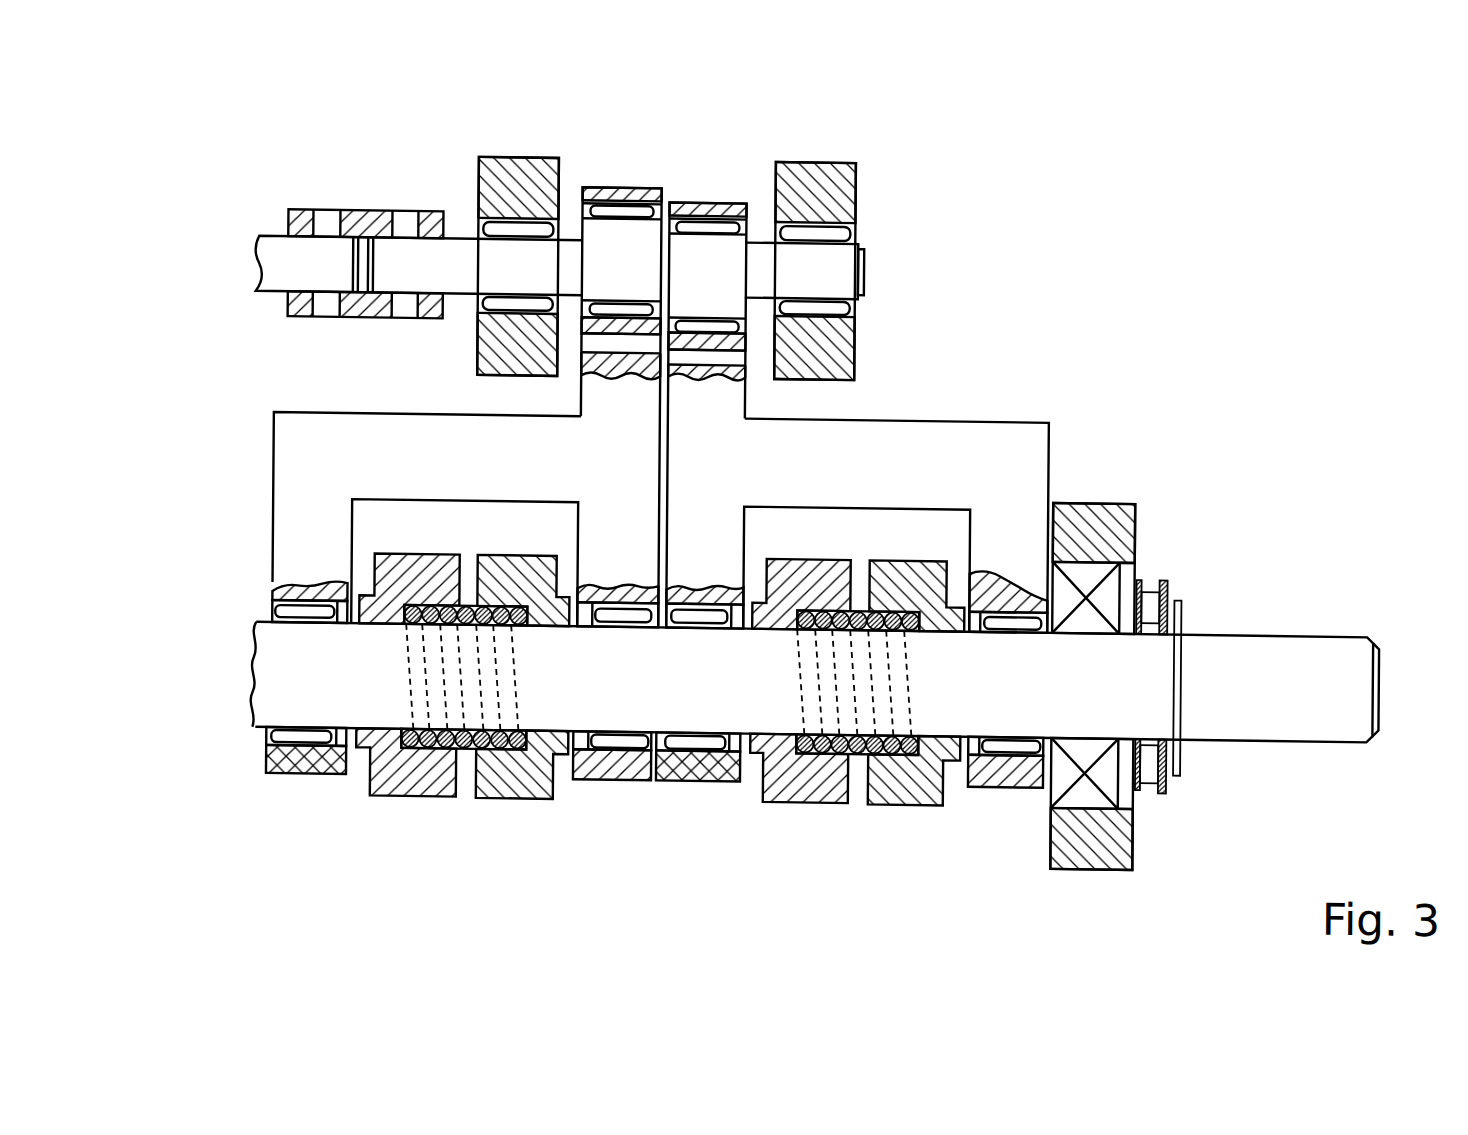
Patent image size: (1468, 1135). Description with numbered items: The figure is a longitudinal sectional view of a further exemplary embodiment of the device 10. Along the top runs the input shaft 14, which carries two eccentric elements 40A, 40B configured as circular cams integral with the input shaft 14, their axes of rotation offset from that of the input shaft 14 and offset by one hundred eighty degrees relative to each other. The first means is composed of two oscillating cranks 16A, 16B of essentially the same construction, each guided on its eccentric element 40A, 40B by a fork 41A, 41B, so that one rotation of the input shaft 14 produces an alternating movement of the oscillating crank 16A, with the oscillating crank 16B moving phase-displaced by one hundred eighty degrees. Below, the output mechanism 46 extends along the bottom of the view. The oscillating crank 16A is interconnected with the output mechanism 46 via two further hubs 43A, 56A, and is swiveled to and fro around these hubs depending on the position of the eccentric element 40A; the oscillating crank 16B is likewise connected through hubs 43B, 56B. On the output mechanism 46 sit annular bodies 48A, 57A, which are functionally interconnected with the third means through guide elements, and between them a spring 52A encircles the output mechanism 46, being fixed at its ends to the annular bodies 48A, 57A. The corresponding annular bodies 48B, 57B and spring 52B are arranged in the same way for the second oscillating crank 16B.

The device 10 is at (312, 164).
The input shaft 14 is at (428, 251).
The eccentric element 40A is at (577, 335).
The eccentric element 40B is at (783, 337).
The fork 41A is at (628, 192).
The fork 41B is at (695, 201).
The oscillating crank 16A is at (322, 451).
The oscillating crank 16B is at (981, 460).
The hub 43A is at (297, 773).
The hub 43B is at (702, 758).
The annular body 48A is at (377, 794).
The annular body 48B is at (792, 783).
The spring 52A is at (466, 604).
The spring 52B is at (864, 744).
The hub 56A is at (599, 773).
The hub 56B is at (1007, 763).
The annular body 57A is at (485, 794).
The annular body 57B is at (895, 767).
The output mechanism 46 is at (1255, 649).